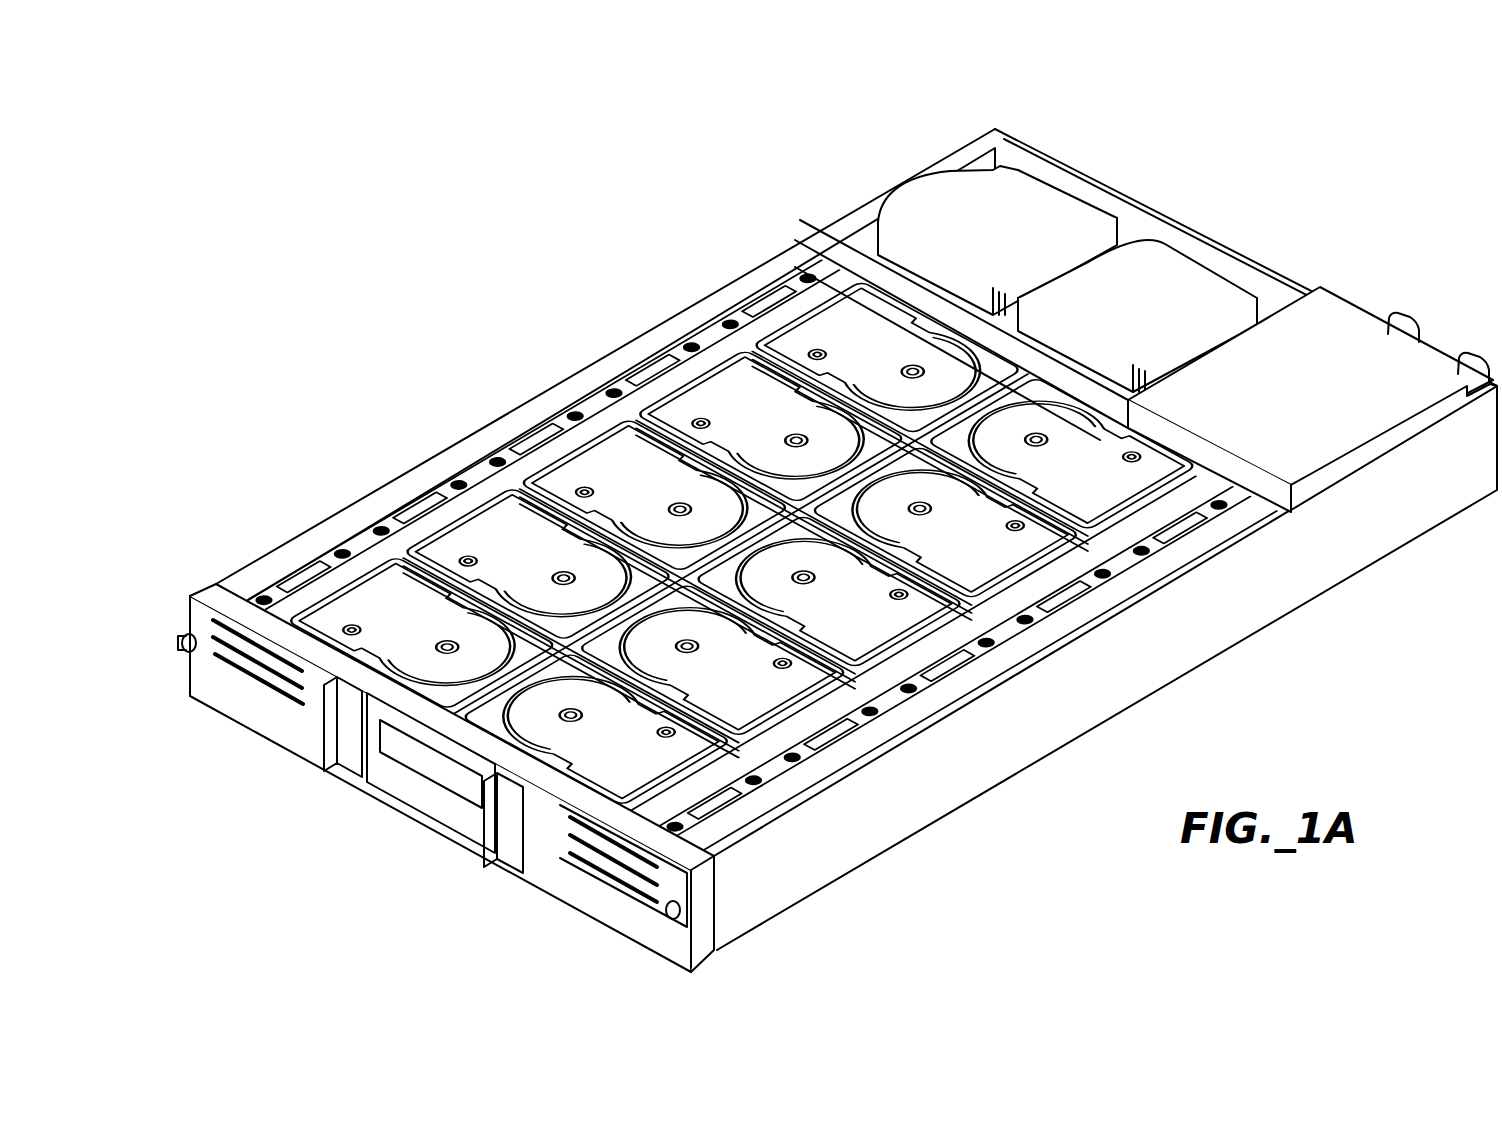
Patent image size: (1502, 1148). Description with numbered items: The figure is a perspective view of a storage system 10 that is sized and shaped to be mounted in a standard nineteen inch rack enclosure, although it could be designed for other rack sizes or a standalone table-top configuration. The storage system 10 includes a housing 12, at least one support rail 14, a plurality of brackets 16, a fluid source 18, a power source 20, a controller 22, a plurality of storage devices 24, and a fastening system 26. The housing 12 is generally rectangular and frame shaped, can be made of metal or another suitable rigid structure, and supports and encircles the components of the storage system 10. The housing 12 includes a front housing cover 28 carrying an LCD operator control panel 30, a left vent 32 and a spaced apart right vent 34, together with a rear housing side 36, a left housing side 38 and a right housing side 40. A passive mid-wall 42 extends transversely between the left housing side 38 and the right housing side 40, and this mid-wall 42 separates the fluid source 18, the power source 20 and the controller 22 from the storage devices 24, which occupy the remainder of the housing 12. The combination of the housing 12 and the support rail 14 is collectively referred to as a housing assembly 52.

The storage system 10 is at (1238, 152).
The housing 12 is at (400, 461).
The support rail 14 is at (480, 473).
The brackets 16 is at (605, 420).
The fluid source 18 is at (1090, 226).
The power source 20 is at (1342, 315).
The controller 22 is at (1302, 463).
The storage devices 24 is at (734, 398).
The fastening system 26 is at (553, 417).
The front housing cover 28 is at (327, 757).
The LCD operator control panel 30 is at (425, 803).
The left vent 32 is at (268, 688).
The right vent 34 is at (593, 868).
The rear housing side 36 is at (1265, 276).
The left housing side 38 is at (800, 237).
The right housing side 40 is at (893, 827).
The passive mid-wall 42 is at (1233, 457).
The housing assembly 52 is at (312, 418).